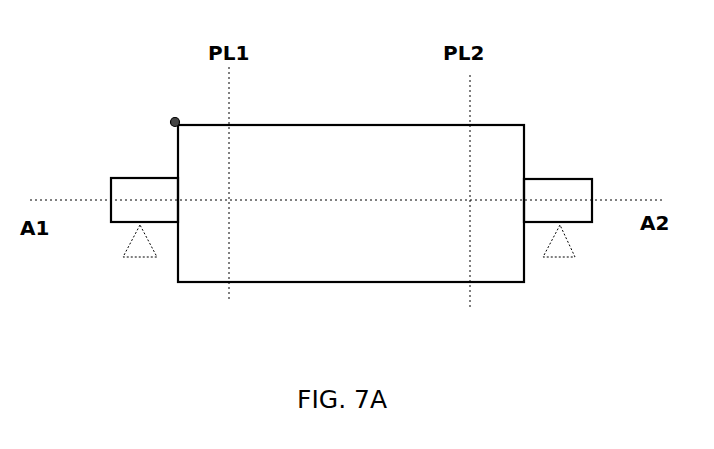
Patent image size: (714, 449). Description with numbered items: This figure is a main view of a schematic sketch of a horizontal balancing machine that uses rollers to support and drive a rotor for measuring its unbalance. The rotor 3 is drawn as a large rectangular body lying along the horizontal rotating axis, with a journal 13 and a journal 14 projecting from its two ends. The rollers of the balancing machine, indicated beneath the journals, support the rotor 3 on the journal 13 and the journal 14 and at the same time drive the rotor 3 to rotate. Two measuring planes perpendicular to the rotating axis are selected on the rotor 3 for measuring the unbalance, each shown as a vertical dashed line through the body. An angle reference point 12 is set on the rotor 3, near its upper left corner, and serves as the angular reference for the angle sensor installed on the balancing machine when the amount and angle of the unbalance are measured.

The rotor 3 is at (341, 165).
The angle reference point 12 is at (155, 124).
The journal 13 is at (140, 203).
The journal 14 is at (573, 202).